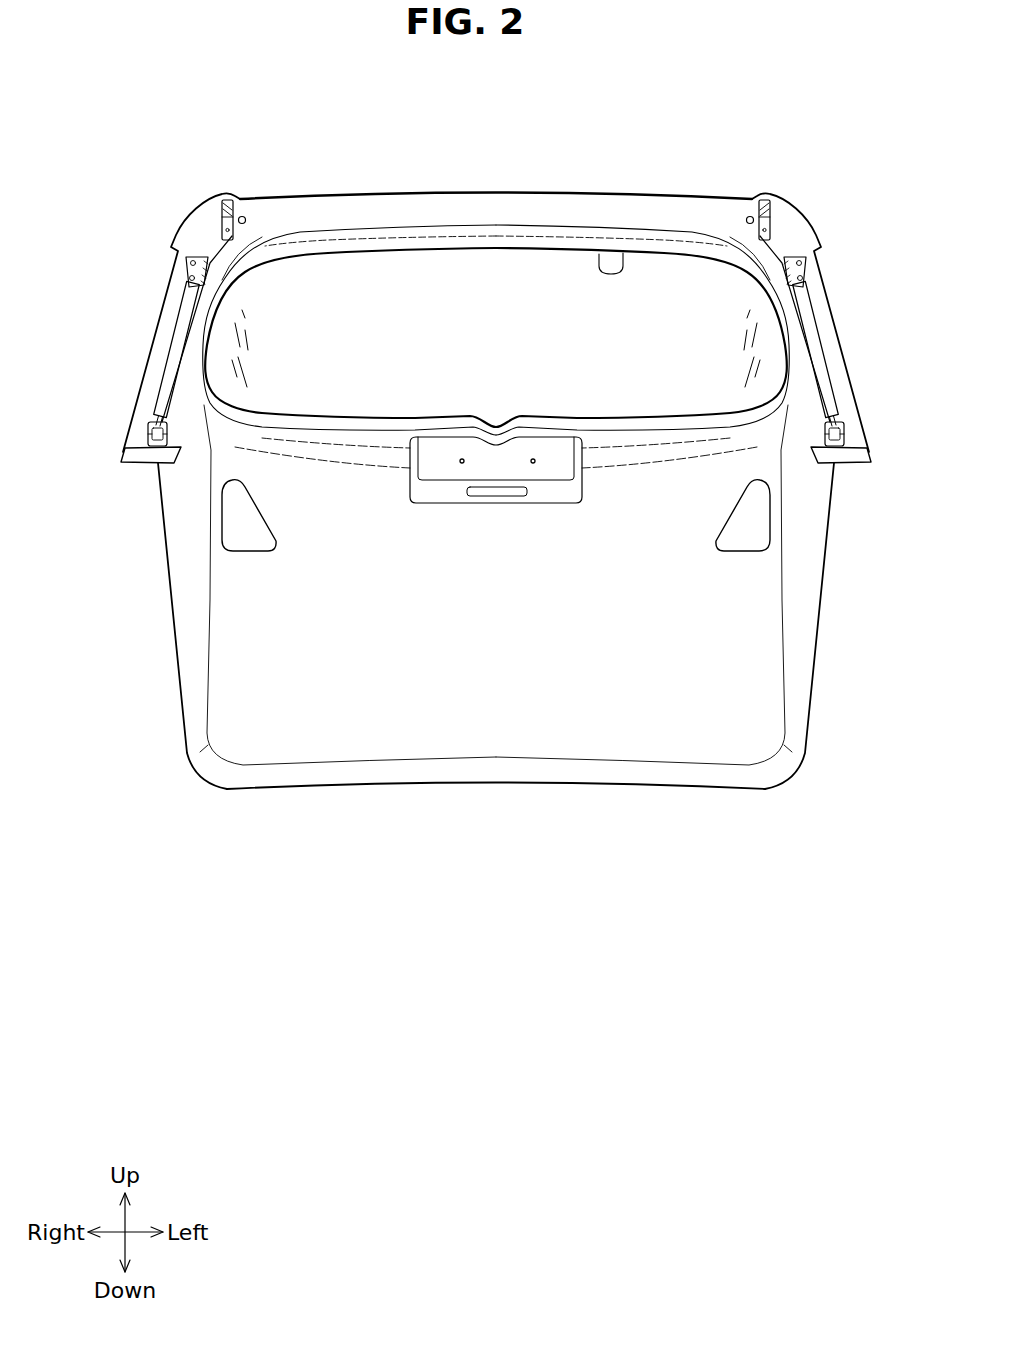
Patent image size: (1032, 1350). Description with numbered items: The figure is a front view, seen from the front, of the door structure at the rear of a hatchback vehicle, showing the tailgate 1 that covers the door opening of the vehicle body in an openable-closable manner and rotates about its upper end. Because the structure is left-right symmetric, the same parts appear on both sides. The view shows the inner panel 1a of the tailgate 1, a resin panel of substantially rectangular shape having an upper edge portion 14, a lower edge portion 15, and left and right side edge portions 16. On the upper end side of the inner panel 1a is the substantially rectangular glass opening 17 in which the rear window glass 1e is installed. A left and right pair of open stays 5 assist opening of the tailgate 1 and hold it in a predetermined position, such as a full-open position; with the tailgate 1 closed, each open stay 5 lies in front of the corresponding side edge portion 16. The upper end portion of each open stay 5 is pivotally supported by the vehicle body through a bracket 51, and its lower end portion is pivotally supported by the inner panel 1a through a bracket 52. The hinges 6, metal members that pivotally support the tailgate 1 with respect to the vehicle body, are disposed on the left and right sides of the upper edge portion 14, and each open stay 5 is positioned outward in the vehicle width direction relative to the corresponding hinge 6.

The tailgate 1 is at (672, 180).
The inner panel 1a is at (445, 190).
The rear window glass 1e is at (542, 273).
The upper edge portion 14 is at (395, 215).
The lower edge portion 15 is at (495, 770).
The side edge portion 16 is at (155, 313).
The glass opening 17 is at (623, 253).
The open stay 5 is at (172, 360).
The bracket 51 is at (188, 268).
The bracket 52 is at (148, 437).
The hinge 6 is at (228, 205).